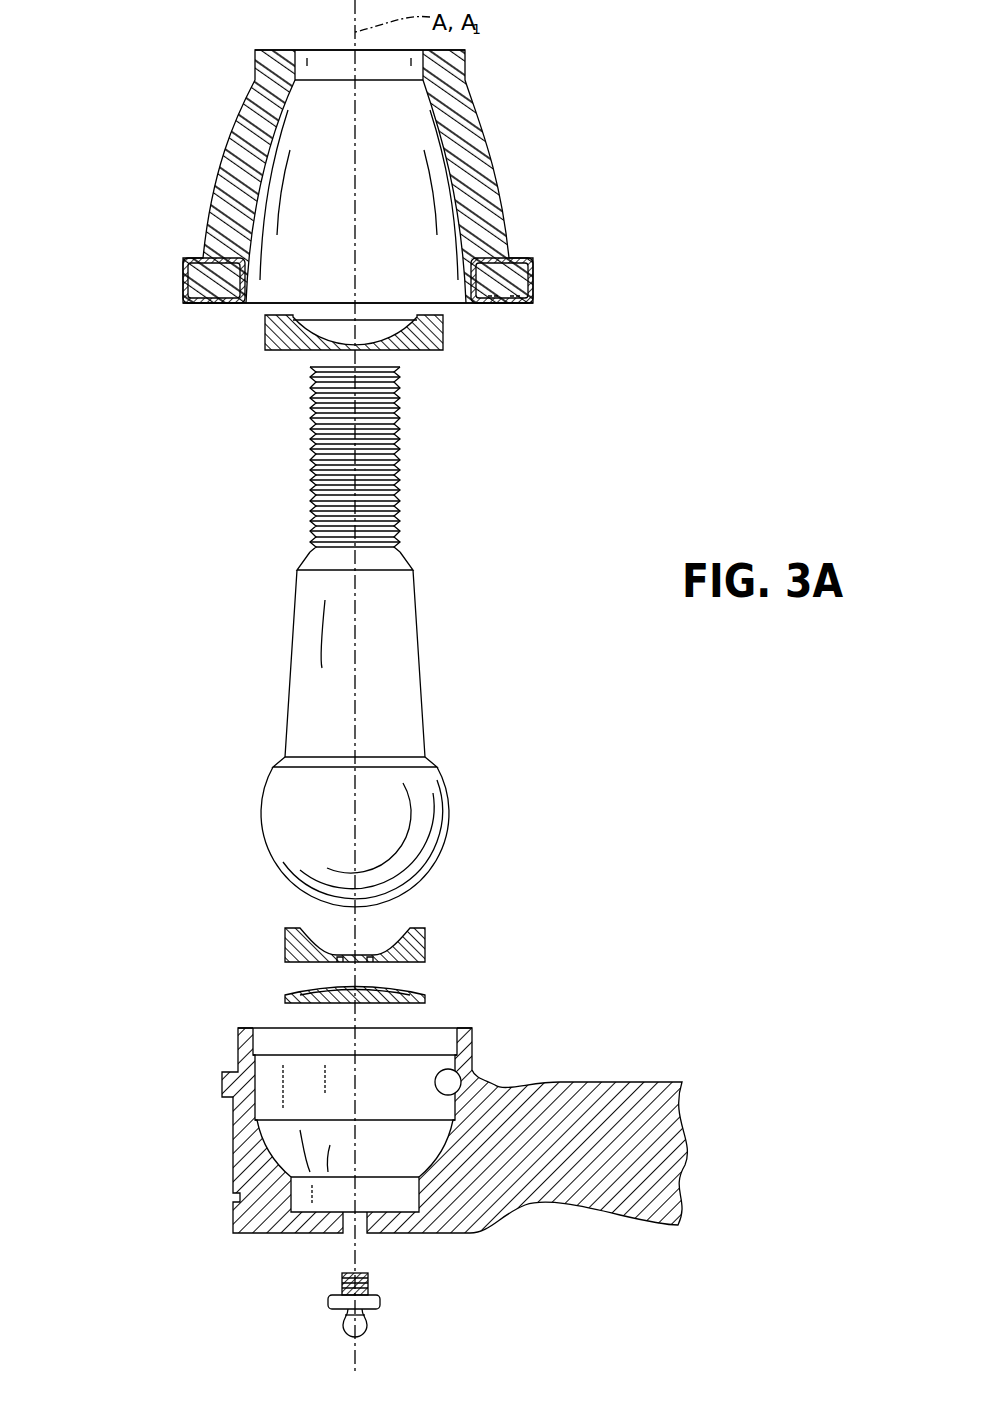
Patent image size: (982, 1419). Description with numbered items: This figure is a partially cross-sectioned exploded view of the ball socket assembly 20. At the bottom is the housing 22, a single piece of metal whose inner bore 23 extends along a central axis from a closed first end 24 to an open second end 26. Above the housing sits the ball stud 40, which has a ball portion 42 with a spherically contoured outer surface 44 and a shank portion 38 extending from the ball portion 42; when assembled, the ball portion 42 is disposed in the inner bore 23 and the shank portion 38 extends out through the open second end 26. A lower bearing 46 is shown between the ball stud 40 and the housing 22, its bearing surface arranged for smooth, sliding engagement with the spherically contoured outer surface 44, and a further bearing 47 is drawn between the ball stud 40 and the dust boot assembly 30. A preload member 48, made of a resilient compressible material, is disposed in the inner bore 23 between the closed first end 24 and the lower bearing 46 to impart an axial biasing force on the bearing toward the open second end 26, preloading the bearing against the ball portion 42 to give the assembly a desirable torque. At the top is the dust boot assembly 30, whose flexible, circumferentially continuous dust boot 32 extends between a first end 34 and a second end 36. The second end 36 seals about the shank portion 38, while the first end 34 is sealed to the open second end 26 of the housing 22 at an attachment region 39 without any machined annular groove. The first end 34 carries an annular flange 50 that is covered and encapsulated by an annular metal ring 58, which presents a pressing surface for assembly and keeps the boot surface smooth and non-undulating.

The ball socket assembly 20 is at (107, 183).
The housing 22 is at (248, 1161).
The inner bore 23 is at (460, 1066).
The closed first end 24 is at (253, 1235).
The open second end 26 is at (245, 1028).
The dust boot assembly 30 is at (556, 185).
The dust boot 32 is at (487, 131).
The first end 34 is at (246, 303).
The second end 36 is at (271, 47).
The shank portion 38 is at (413, 598).
The attachment region 39 is at (592, 218).
The ball stud 40 is at (503, 717).
The ball portion 42 is at (449, 819).
The spherically contoured outer surface 44 is at (270, 856).
The lower bearing 46 is at (426, 945).
The upper bearing 47 is at (444, 329).
The preload member 48 is at (426, 1001).
The annular flange 50 is at (535, 285).
The annular metal ring 58 is at (530, 307).